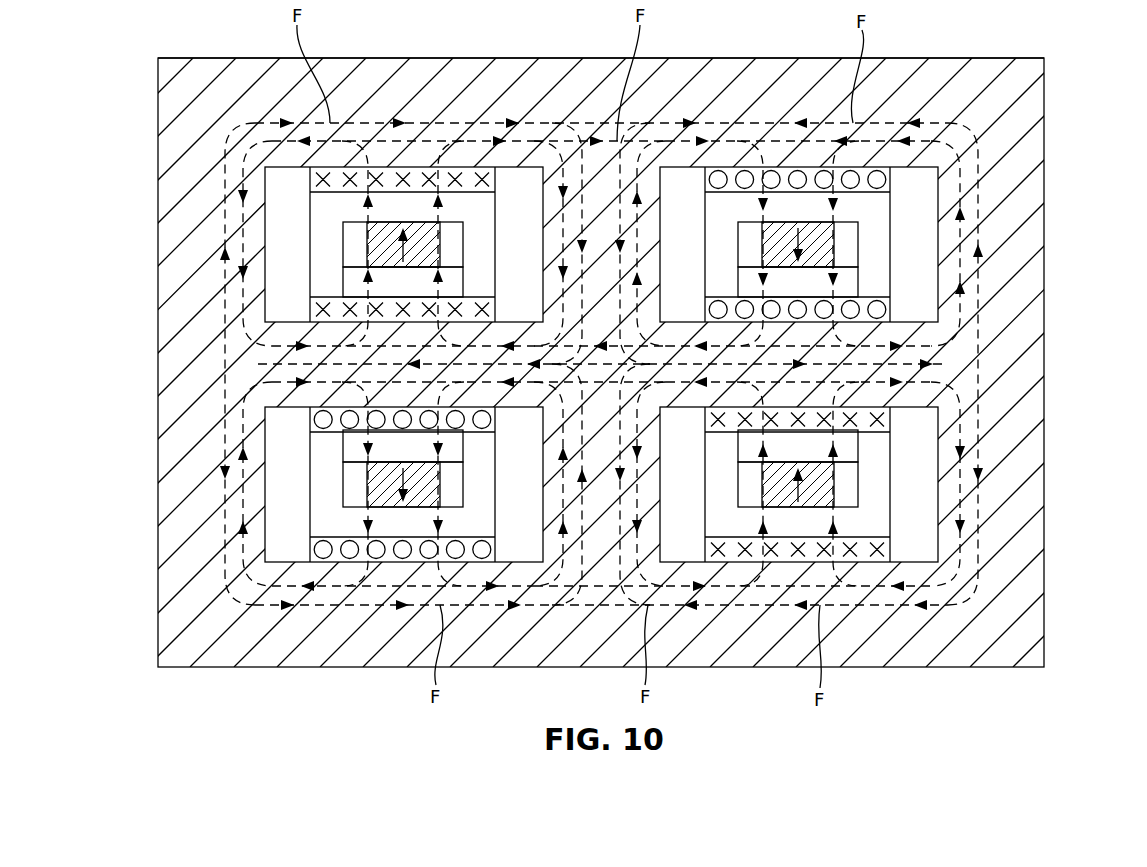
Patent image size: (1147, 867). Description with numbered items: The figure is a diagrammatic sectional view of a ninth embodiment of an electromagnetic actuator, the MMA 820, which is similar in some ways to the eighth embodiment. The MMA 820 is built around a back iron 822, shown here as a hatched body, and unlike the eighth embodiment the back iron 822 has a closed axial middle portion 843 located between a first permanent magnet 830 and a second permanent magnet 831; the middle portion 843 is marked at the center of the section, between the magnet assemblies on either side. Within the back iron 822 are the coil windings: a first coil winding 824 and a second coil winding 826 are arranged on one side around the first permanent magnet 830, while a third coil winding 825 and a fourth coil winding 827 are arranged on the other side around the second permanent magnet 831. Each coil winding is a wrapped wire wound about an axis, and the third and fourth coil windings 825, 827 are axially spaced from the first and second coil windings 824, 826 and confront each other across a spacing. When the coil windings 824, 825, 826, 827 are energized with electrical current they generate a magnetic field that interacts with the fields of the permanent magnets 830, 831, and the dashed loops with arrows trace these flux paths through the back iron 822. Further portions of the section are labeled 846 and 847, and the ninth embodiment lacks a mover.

The MMA 820 is at (1052, 100).
The back iron 822 is at (460, 57).
The first coil winding 824 is at (903, 177).
The third coil winding 825 is at (300, 177).
The second coil winding 826 is at (903, 305).
The fourth coil winding 827 is at (300, 307).
The first permanent magnet 830 is at (870, 240).
The second permanent magnet 831 is at (333, 247).
The closed axial middle portion 843 is at (624, 210).
The actuator core 846 is at (202, 489).
The actuator core 847 is at (1000, 480).